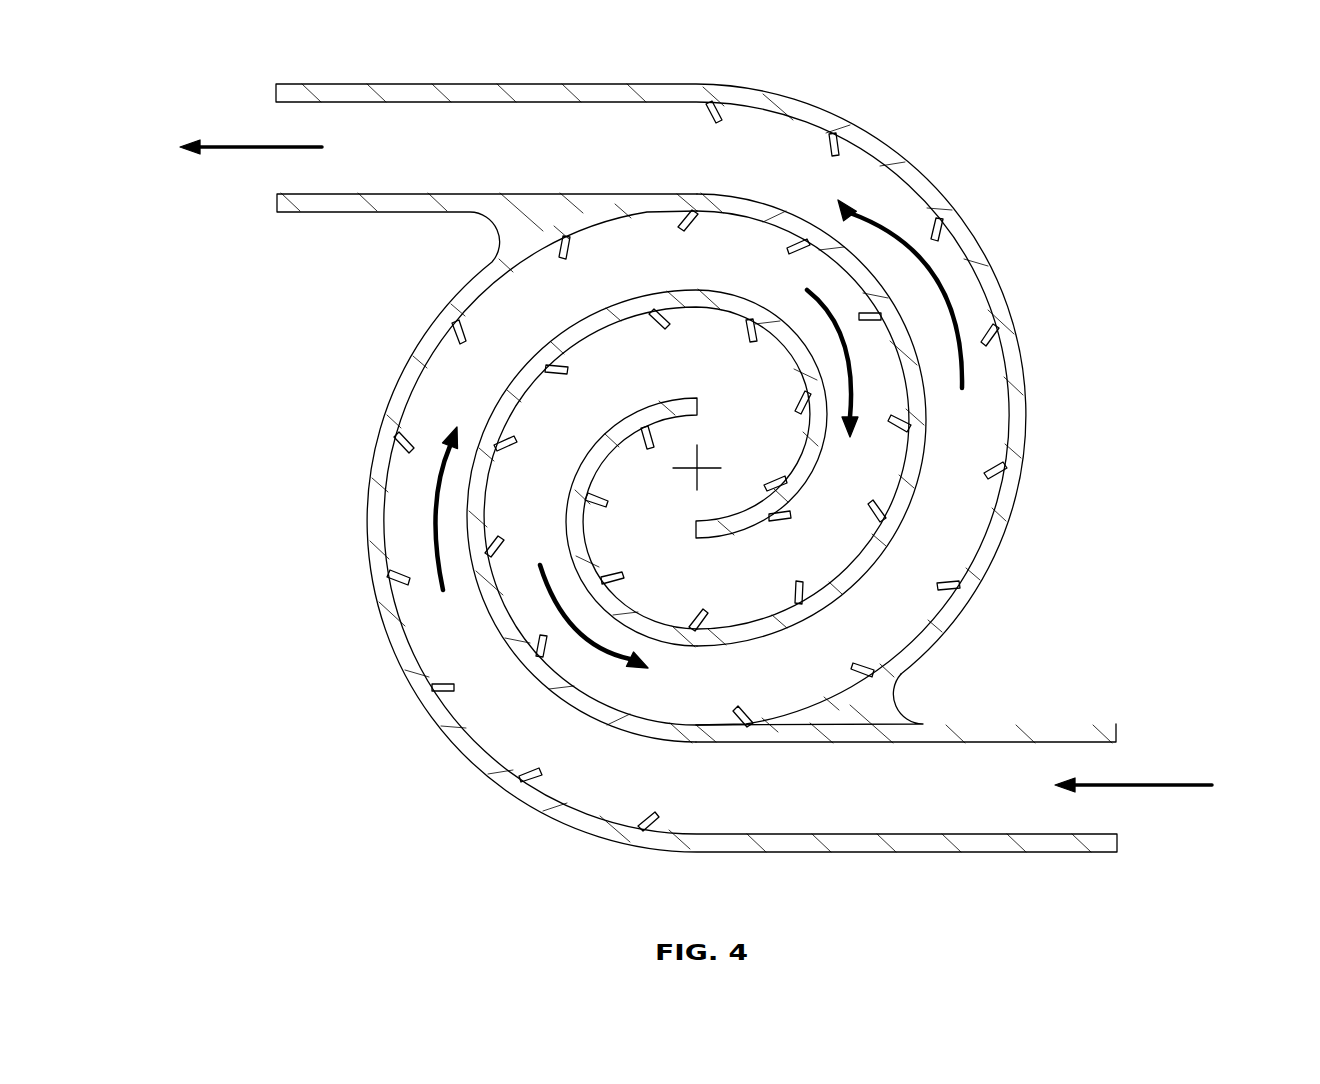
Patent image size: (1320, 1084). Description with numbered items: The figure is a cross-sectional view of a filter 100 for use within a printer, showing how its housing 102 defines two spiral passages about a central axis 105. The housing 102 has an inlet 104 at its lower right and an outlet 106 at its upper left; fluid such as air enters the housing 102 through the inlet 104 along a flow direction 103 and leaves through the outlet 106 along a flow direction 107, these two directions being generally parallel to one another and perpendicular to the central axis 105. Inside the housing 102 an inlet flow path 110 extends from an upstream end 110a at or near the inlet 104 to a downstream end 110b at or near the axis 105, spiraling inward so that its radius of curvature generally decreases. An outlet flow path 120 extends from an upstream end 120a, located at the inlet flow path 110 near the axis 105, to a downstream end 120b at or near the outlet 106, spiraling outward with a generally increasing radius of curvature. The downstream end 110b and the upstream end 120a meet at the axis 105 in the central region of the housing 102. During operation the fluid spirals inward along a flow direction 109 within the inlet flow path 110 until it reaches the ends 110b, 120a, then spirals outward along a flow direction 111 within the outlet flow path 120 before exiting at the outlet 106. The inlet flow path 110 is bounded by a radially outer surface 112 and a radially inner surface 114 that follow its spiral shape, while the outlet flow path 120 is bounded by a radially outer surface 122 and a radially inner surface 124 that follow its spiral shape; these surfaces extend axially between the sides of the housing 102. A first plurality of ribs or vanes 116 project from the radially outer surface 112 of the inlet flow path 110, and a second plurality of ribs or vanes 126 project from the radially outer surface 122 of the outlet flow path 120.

The filter 100 is at (1147, 93).
The housing 102 is at (924, 172).
The flow direction 103 is at (1212, 783).
The inlet 104 is at (1120, 756).
The central axis 105 is at (695, 468).
The outlet 106 is at (272, 177).
The flow direction 107 is at (212, 150).
The flow direction 109 is at (853, 367).
The inlet flow path 110 is at (438, 621).
The upstream end 110a is at (1123, 823).
The downstream end 110b is at (694, 501).
The flow direction 111 is at (937, 290).
The radially outer surface 112 is at (392, 486).
The radially inner surface 114 is at (485, 437).
The ribs or vanes 116 is at (572, 258).
The outlet flow path 120 is at (984, 388).
The upstream end 120a is at (696, 429).
The downstream end 120b is at (274, 117).
The radially outer surface 122 is at (995, 508).
The radially inner surface 124 is at (928, 410).
The ribs or vanes 126 is at (826, 142).